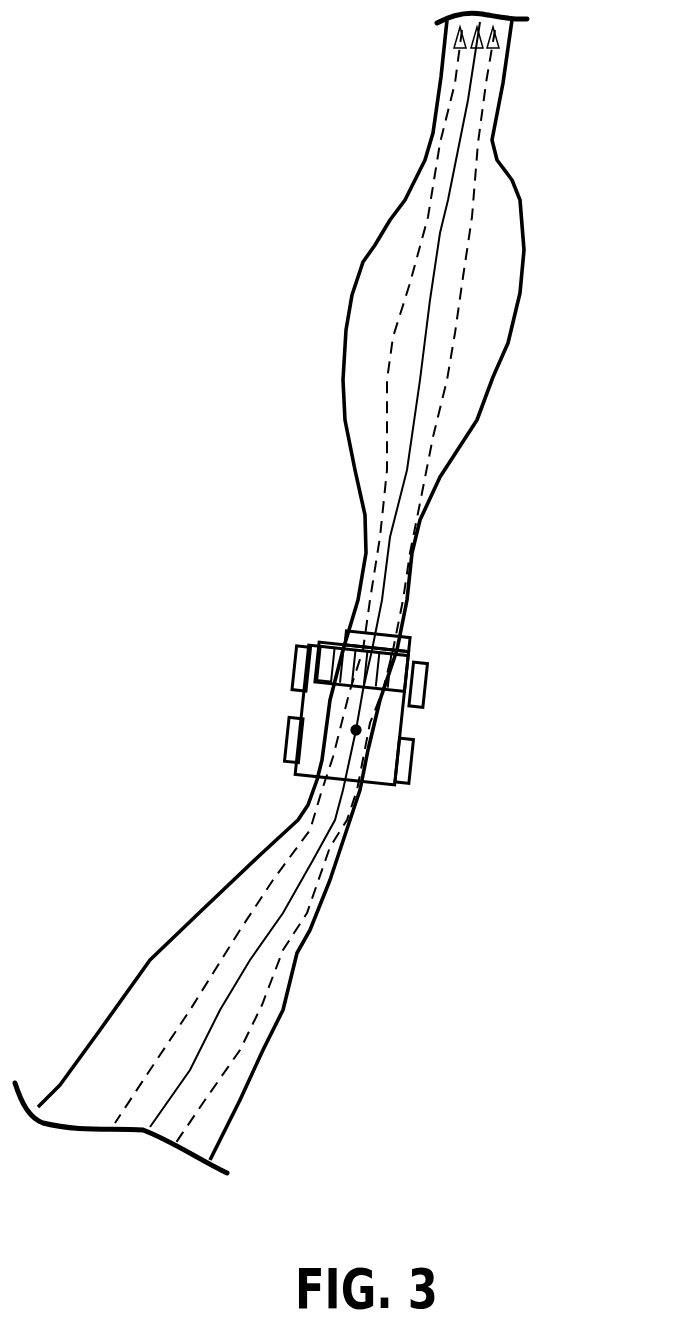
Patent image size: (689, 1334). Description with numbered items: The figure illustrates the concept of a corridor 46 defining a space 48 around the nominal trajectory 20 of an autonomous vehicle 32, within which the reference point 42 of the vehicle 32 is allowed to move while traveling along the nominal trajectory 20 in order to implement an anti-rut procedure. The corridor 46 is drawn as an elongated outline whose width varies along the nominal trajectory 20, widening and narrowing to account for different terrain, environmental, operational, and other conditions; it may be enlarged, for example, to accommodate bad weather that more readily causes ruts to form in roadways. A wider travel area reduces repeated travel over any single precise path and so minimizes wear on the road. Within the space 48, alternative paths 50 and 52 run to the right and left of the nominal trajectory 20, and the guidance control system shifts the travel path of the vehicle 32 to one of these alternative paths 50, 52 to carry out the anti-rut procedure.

The nominal trajectory 20 is at (463, 118).
The vehicle 32 is at (428, 667).
The reference point 42 is at (358, 729).
The corridor 46 is at (526, 303).
The space 48 is at (463, 354).
The alternative path 50 is at (476, 214).
The alternative path 52 is at (423, 233).